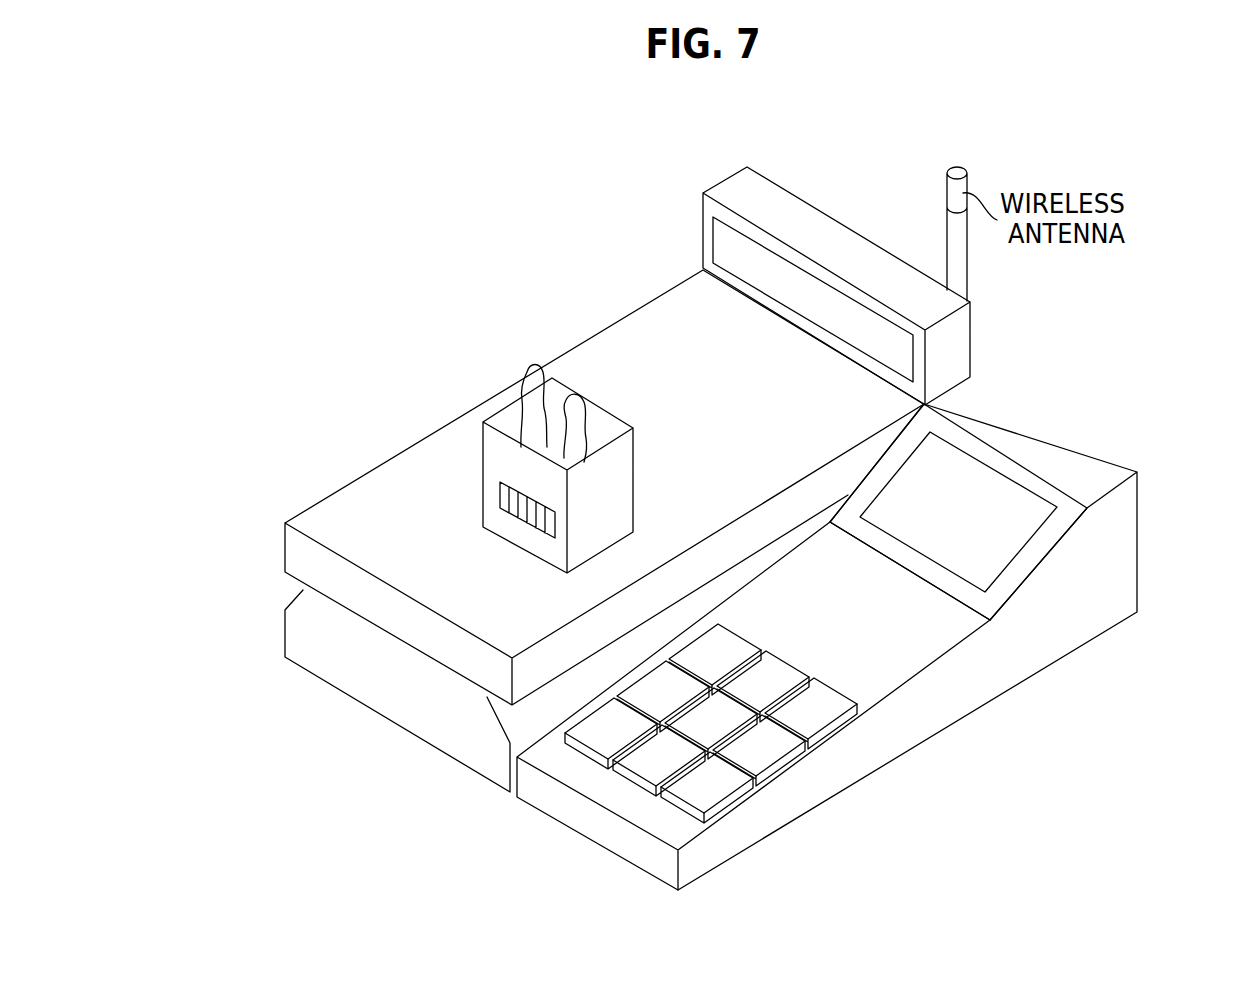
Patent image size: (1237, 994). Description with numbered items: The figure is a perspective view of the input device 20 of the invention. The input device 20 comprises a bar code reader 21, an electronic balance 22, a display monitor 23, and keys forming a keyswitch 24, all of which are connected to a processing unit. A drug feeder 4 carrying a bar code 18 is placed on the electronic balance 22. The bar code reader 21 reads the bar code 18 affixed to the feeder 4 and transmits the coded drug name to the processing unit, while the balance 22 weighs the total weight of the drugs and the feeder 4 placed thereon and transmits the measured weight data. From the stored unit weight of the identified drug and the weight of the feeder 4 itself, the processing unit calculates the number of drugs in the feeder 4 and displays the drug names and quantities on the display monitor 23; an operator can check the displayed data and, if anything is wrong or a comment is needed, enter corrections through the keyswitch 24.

The input device 20 is at (508, 314).
The bar code reader 21 is at (740, 265).
The feeder 4 is at (437, 365).
The bar code 18 is at (502, 497).
The electronic balance 22 is at (405, 520).
The display monitor 23 is at (980, 538).
The keyswitch 24 is at (725, 712).